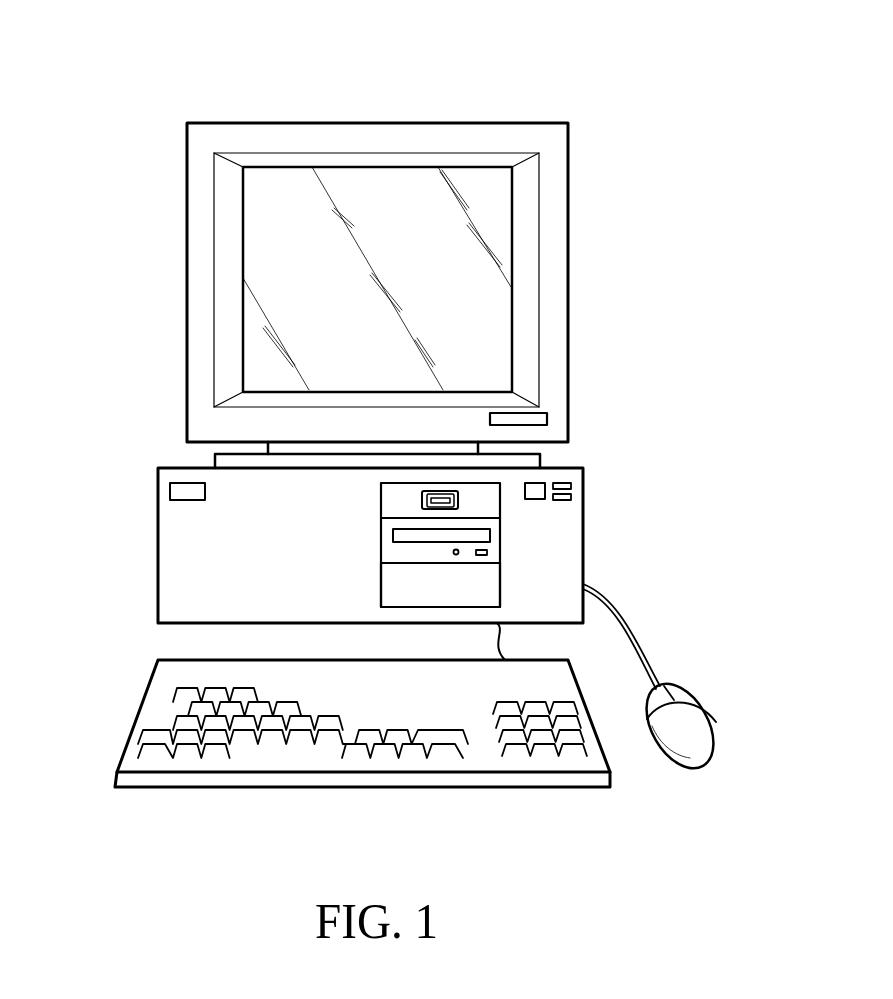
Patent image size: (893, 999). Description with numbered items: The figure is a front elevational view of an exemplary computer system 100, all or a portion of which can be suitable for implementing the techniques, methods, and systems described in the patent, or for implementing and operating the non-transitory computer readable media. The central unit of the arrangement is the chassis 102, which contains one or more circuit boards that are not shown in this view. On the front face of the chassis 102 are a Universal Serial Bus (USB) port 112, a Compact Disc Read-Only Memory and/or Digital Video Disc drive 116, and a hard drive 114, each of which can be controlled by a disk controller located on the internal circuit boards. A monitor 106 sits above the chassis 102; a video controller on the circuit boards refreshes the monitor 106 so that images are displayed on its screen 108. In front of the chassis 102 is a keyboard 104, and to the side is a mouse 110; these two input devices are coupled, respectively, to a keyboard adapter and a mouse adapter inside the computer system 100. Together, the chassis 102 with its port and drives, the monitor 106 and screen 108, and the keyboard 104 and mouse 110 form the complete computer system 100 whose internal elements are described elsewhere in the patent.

The computer system 100 is at (558, 100).
The chassis 102 is at (157, 547).
The keyboard 104 is at (140, 710).
The monitor 106 is at (263, 120).
The screen 108 is at (293, 285).
The mouse 110 is at (700, 715).
The Universal Serial Bus (USB) port 112 is at (459, 497).
The hard drive 114 is at (492, 583).
The Compact Disc Read-Only Memory (CD-ROM) and/or Digital Video Disc (DVD) drive 116 is at (491, 541).